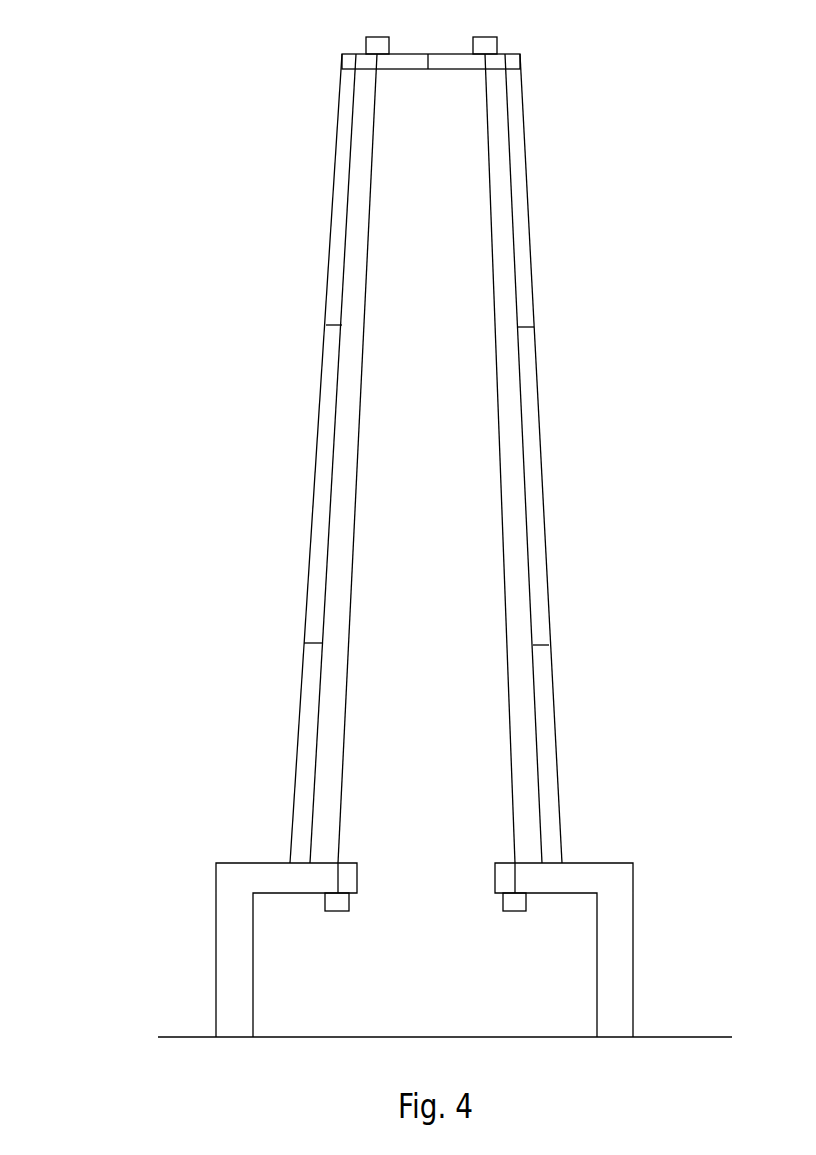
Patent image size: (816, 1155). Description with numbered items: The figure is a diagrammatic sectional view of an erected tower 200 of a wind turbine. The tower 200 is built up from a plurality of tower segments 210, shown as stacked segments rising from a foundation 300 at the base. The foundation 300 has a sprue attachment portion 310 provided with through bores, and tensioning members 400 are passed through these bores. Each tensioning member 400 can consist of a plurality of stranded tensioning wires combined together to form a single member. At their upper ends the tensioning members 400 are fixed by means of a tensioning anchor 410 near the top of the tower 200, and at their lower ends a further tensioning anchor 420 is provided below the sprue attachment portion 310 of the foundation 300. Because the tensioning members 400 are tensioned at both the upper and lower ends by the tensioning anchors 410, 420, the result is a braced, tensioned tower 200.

The tower 200 is at (553, 290).
The tower segments 210 is at (331, 247).
The foundation 300 is at (633, 924).
The sprue attachment portion 310 is at (357, 875).
The tensioning members 400 is at (363, 350).
The tensioning anchor 410 is at (365, 52).
The tensioning anchor 420 is at (325, 903).